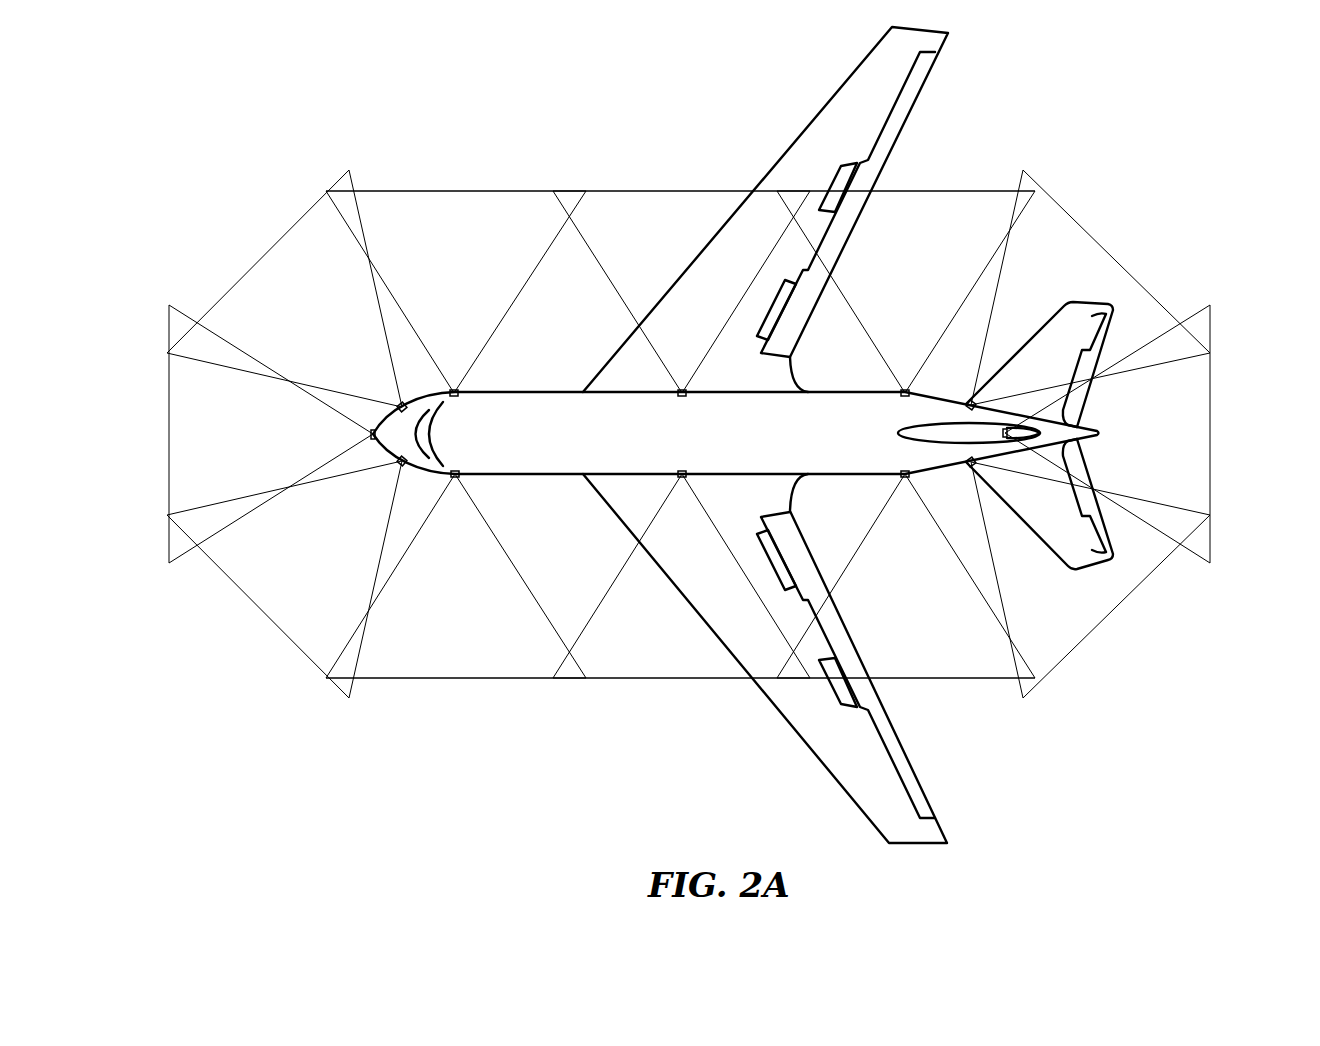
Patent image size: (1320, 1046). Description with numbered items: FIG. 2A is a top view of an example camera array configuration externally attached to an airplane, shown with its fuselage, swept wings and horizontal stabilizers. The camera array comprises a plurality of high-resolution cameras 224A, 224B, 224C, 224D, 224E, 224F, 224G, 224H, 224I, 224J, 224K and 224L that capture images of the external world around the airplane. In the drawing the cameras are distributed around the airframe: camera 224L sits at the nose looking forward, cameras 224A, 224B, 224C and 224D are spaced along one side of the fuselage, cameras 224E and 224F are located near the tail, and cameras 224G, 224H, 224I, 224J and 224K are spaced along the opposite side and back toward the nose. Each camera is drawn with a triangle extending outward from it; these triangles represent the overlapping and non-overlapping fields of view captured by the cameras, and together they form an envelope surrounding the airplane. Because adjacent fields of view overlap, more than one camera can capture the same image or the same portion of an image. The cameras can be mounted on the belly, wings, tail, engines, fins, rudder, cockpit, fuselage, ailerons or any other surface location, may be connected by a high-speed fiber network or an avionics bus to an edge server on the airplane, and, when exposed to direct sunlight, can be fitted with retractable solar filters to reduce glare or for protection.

The high-resolution camera 224A is at (403, 406).
The high-resolution camera 224B is at (454, 393).
The high-resolution camera 224C is at (682, 392).
The high-resolution camera 224D is at (905, 393).
The high-resolution camera 224E is at (971, 405).
The high-resolution camera 224F is at (1010, 434).
The high-resolution camera 224G is at (971, 463).
The high-resolution camera 224H is at (905, 474).
The high-resolution camera 224I is at (682, 475).
The high-resolution camera 224J is at (455, 473).
The high-resolution camera 224K is at (402, 462).
The high-resolution camera 224L is at (373, 435).